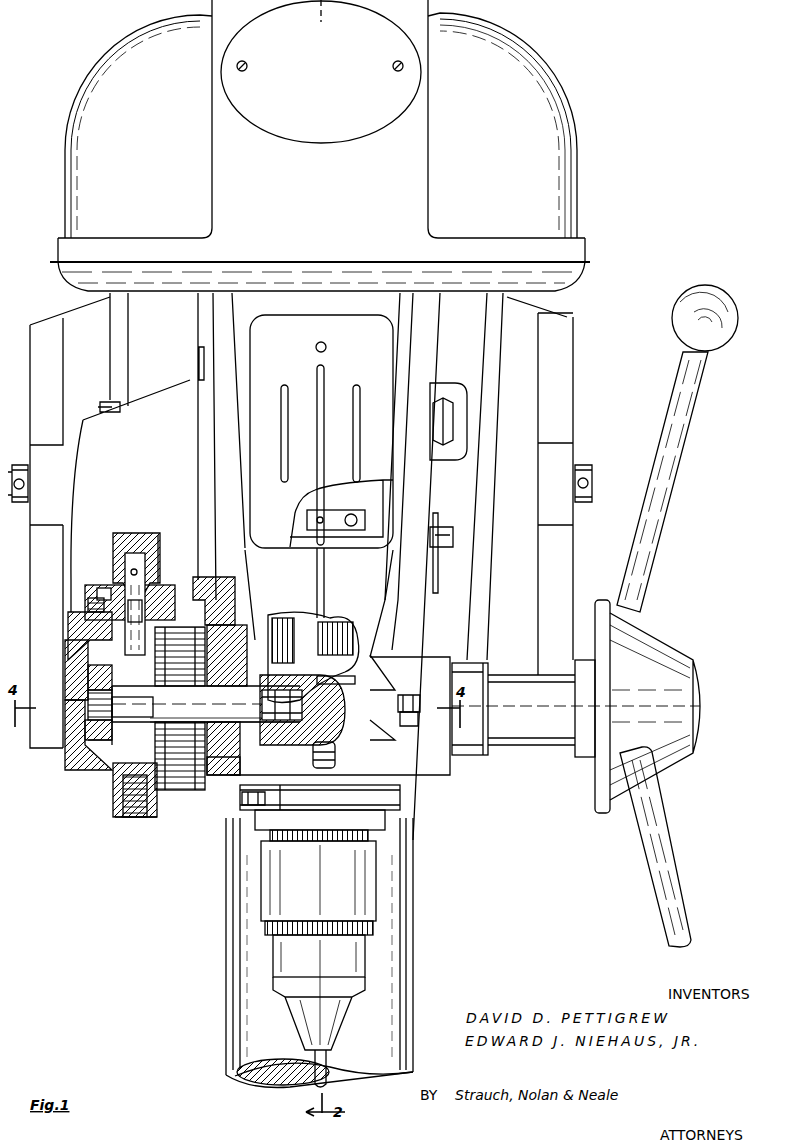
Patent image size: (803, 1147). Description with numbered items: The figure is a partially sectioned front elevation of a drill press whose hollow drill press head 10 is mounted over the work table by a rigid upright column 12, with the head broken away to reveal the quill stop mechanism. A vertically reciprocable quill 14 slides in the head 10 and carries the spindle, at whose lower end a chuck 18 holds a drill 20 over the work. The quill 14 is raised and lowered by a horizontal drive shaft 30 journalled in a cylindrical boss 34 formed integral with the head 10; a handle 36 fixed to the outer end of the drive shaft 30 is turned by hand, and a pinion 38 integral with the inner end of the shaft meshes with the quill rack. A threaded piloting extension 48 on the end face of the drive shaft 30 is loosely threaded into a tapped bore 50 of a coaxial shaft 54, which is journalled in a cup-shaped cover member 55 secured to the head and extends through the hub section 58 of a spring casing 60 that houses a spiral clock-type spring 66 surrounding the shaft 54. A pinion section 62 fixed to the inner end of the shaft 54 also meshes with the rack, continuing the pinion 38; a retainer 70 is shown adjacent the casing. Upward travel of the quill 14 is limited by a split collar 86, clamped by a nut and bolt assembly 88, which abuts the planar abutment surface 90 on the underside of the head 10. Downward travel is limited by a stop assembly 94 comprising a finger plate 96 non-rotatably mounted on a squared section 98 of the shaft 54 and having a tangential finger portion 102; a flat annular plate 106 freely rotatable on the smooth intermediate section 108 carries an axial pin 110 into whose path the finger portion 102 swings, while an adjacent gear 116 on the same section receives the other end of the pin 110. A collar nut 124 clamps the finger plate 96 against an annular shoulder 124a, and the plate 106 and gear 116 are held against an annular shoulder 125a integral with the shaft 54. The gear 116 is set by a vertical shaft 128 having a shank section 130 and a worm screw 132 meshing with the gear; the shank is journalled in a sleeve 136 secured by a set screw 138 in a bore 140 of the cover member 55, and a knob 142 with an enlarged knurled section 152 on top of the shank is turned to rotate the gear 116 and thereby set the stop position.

The drill press head 10 is at (560, 320).
The upright column 12 is at (402, 900).
The quill 14 is at (320, 637).
The chuck 18 is at (315, 1022).
The drill 20 is at (315, 1052).
The drive shaft 30 is at (552, 730).
The boss 34 is at (482, 747).
The handle 36 is at (683, 405).
The pinion 38 is at (328, 678).
The piloting extension 48 is at (305, 712).
The tapped bore 50 is at (303, 703).
The shaft 54 is at (233, 698).
The cover member 55 is at (100, 740).
The hub section 58 is at (272, 660).
The spring casing 60 is at (215, 640).
The pinion section 62 is at (293, 680).
The spring 66 is at (183, 783).
The retainer 70 is at (223, 767).
The split collar 86 is at (420, 792).
The nut and bolt assembly 88 is at (417, 805).
The abutment surface 90 is at (339, 785).
The stop assembly 94 is at (110, 745).
The finger plate 96 is at (90, 733).
The squared section 98 is at (100, 706).
The finger portion 102 is at (83, 667).
The annular plate 106 is at (116, 770).
The intermediate section 108 is at (132, 707).
The pin 110 is at (92, 634).
The gear 116 is at (170, 680).
The collar nut 124 is at (83, 688).
The annular shoulder 124a is at (85, 723).
The annular shoulder 125a is at (150, 713).
The shaft 128 is at (117, 578).
The shank section 130 is at (140, 583).
The worm screw 132 is at (137, 815).
The sleeve 136 is at (105, 590).
The set screw 138 is at (92, 606).
The bore 140 is at (143, 600).
The knob 142 is at (133, 530).
The knurled section 152 is at (158, 540).